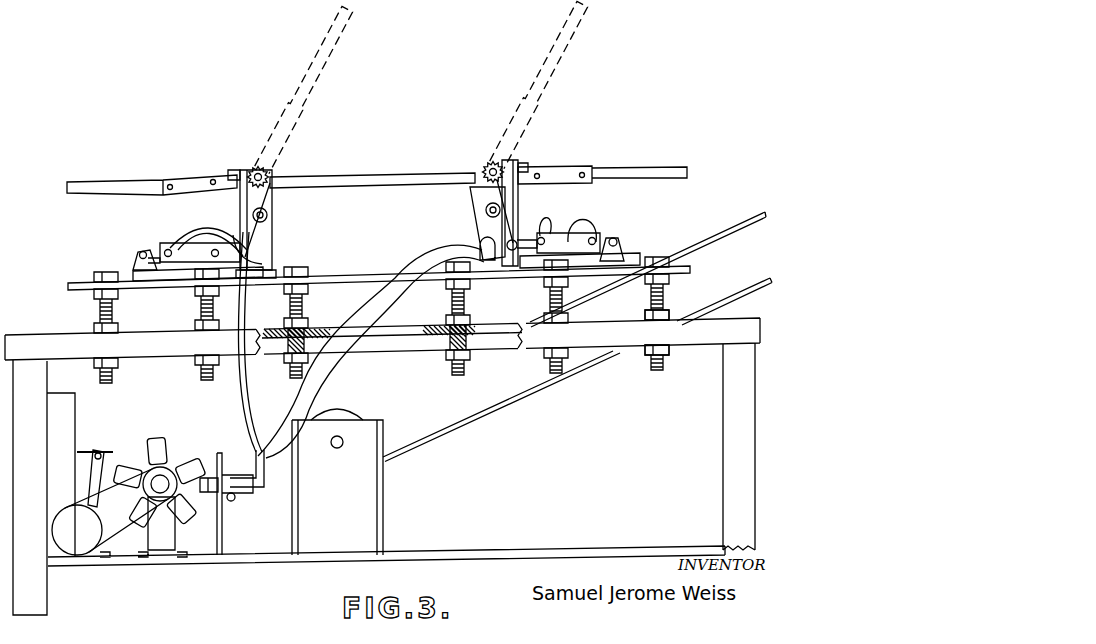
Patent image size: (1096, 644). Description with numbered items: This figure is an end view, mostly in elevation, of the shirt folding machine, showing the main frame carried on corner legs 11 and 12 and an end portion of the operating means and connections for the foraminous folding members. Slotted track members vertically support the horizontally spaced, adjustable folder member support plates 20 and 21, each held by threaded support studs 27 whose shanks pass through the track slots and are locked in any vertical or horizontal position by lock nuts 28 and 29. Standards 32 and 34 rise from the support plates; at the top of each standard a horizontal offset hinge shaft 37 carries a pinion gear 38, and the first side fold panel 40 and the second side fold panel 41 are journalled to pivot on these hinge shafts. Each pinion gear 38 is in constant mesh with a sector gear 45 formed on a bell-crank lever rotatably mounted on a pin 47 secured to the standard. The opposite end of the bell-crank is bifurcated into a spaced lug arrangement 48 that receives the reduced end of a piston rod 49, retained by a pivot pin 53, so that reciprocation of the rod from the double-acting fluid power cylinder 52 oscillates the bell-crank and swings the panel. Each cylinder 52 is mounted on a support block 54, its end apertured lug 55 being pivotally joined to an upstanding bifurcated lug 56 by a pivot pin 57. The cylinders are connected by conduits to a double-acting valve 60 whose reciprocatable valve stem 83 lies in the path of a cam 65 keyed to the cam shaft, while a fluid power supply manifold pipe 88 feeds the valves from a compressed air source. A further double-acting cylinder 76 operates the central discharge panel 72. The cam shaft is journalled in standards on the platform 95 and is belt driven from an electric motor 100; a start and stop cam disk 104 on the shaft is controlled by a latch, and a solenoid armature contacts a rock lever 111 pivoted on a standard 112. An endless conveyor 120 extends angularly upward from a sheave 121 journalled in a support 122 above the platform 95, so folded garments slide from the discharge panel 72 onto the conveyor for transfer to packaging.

The leg 11 is at (37, 382).
The leg 12 is at (733, 427).
The folder member support plate 20 is at (78, 281).
The folder member support plate 21 is at (643, 264).
The threaded support stud 27 is at (666, 297).
The lock nut 28 is at (647, 316).
The lock nut 29 is at (668, 357).
The standard 32 is at (520, 191).
The standard 34 is at (270, 250).
The hinge shaft 37 is at (515, 161).
The pinion gear 38 is at (487, 163).
The first side fold panel 40 is at (122, 181).
The second side fold panel 41 is at (560, 69).
The sector gear 45 is at (486, 181).
The pin 47 is at (506, 208).
The spaced lug arrangement 48 is at (265, 279).
The piston rod 49 is at (518, 237).
The double-acting fluid power cylinder 52 is at (596, 230).
The pivot pin 53 is at (508, 276).
The support block 54 is at (581, 272).
The end apertured lug 55 is at (618, 238).
The upstanding bifurcated lug 56 is at (138, 254).
The pivot pin 57 is at (620, 242).
The double-acting valve 60 is at (254, 490).
The cam 65 is at (191, 462).
The central discharge panel 72 is at (368, 176).
The double-acting cylinder 76 is at (476, 233).
The valve stem 83 is at (207, 487).
The fluid power supply manifold pipe 88 is at (233, 501).
The platform 95 is at (163, 517).
The electric motor 100 is at (83, 548).
The start and stop cam disk 104 is at (180, 503).
The rock lever 111 is at (116, 451).
The standard 112 is at (90, 460).
The endless conveyor 120 is at (494, 407).
The sheave 121 is at (352, 412).
The support 122 is at (386, 502).